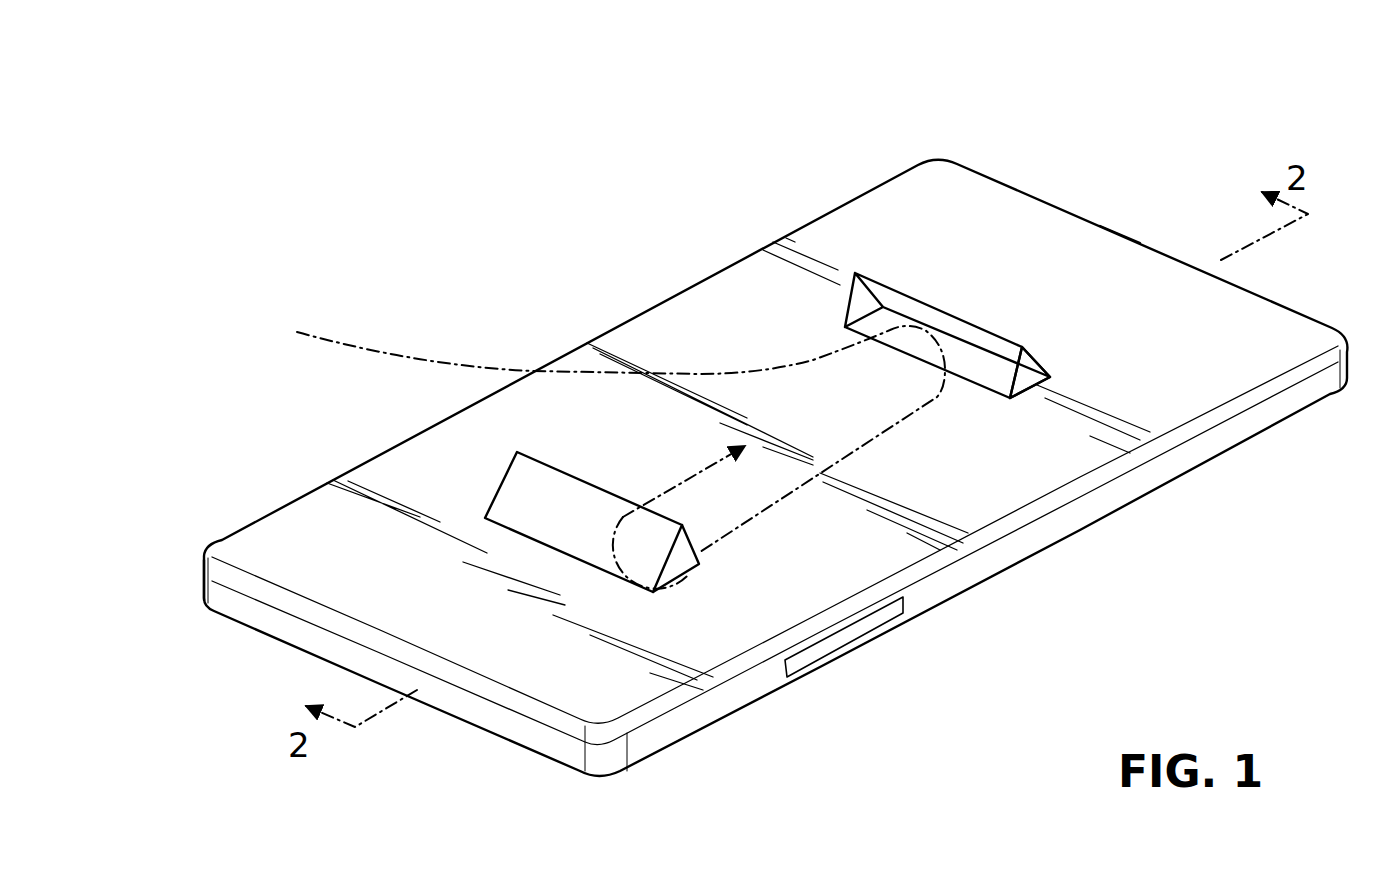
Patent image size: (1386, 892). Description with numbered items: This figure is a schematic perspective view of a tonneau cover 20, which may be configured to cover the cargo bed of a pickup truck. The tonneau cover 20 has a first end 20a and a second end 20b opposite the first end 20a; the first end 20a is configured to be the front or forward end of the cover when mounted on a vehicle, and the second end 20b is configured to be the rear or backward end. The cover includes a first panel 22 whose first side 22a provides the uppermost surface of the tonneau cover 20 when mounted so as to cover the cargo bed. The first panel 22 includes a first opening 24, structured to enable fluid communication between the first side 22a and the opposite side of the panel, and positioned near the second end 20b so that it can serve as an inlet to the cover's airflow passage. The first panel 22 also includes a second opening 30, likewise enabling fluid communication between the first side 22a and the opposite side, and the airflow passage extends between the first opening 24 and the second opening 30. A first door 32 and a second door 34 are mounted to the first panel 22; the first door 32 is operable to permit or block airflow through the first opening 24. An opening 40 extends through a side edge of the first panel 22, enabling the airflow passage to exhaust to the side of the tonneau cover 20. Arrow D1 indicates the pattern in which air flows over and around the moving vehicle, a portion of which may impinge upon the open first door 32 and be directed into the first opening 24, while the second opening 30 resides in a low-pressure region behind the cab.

The tonneau cover 20 is at (428, 277).
The first end 20a is at (215, 593).
The second end 20b is at (1118, 230).
The first panel 22 is at (677, 350).
The first side of the first panel 22a is at (773, 331).
The first opening 24 is at (1052, 380).
The second opening 30 is at (683, 577).
The first door 32 is at (936, 307).
The second door 34 is at (527, 488).
The opening 40 is at (860, 637).
The airflow pattern arrow D1 is at (343, 338).